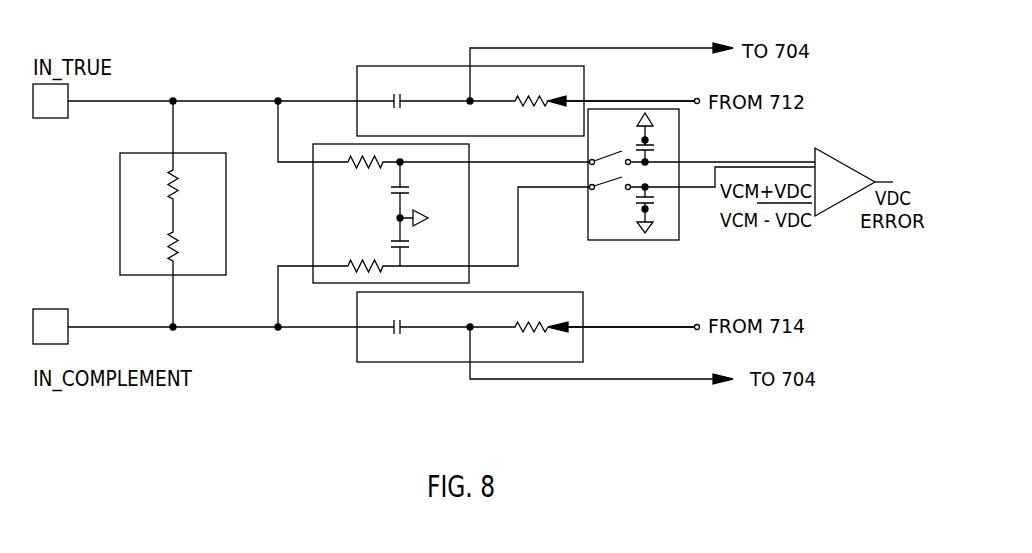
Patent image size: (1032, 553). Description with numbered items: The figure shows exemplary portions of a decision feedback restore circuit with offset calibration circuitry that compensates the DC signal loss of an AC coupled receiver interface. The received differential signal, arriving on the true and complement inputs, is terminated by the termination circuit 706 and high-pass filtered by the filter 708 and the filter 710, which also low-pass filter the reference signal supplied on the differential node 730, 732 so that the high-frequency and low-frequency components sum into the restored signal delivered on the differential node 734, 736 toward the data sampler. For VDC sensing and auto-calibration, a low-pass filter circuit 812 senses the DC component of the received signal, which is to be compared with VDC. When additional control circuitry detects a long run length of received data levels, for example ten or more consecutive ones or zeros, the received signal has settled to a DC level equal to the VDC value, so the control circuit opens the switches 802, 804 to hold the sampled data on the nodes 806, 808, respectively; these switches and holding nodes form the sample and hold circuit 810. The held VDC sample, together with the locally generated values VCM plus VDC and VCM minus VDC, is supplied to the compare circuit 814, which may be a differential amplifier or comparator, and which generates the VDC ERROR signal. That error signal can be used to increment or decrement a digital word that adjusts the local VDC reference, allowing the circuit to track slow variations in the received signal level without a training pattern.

The termination circuit 706 is at (218, 217).
The filter 708 is at (483, 131).
The filter 710 is at (403, 318).
The differential node 730 is at (649, 100).
The differential node 732 is at (649, 327).
The differential node 734 is at (596, 48).
The differential node 736 is at (649, 379).
The switch 802 is at (608, 156).
The switch 804 is at (608, 181).
The node 806 is at (648, 159).
The node 808 is at (644, 198).
The sample and hold circuit 810 is at (628, 137).
The low-pass filter circuit 812 is at (467, 201).
The compare circuit 814 is at (855, 196).